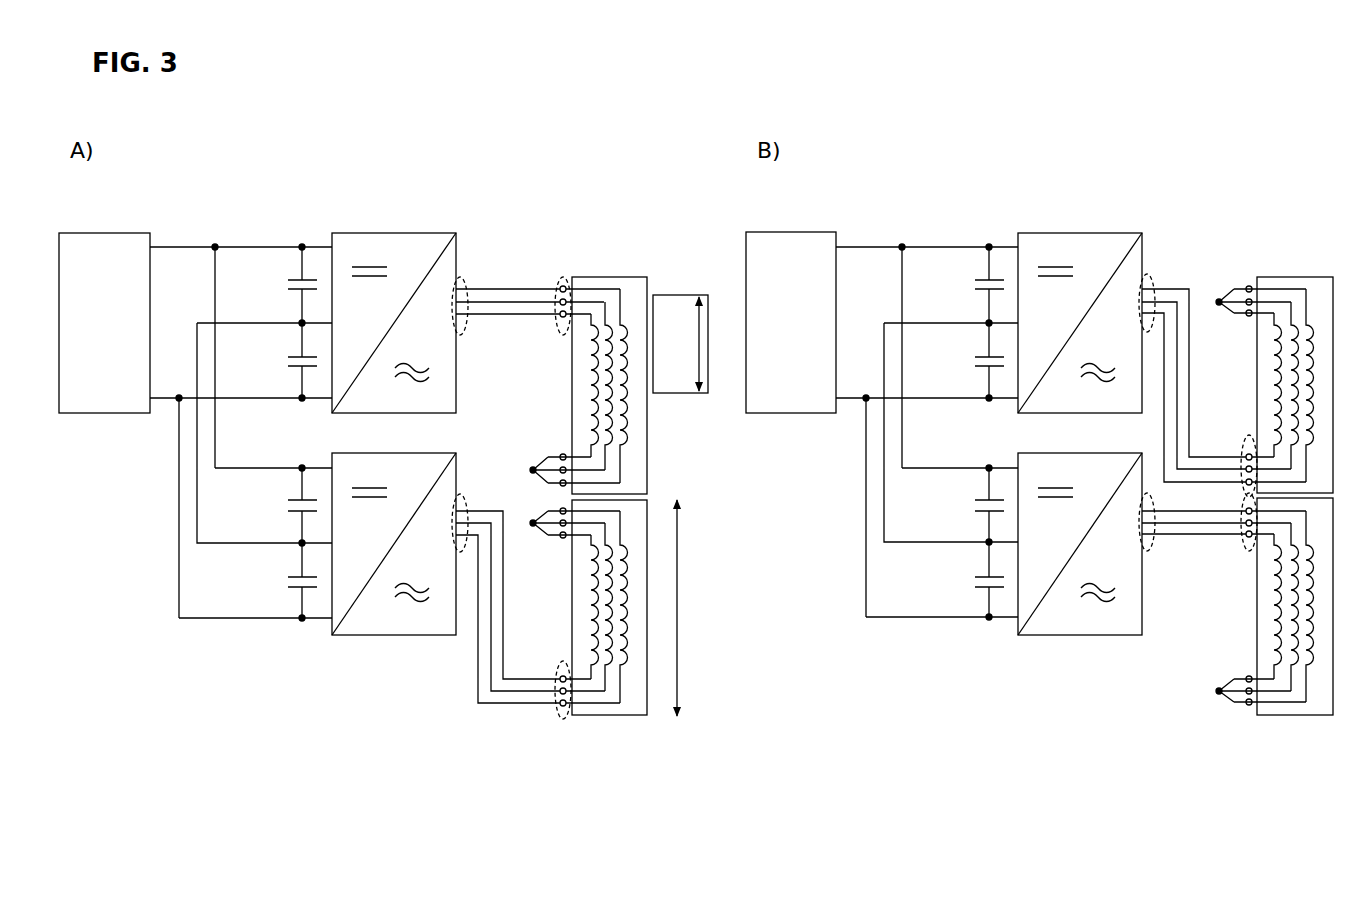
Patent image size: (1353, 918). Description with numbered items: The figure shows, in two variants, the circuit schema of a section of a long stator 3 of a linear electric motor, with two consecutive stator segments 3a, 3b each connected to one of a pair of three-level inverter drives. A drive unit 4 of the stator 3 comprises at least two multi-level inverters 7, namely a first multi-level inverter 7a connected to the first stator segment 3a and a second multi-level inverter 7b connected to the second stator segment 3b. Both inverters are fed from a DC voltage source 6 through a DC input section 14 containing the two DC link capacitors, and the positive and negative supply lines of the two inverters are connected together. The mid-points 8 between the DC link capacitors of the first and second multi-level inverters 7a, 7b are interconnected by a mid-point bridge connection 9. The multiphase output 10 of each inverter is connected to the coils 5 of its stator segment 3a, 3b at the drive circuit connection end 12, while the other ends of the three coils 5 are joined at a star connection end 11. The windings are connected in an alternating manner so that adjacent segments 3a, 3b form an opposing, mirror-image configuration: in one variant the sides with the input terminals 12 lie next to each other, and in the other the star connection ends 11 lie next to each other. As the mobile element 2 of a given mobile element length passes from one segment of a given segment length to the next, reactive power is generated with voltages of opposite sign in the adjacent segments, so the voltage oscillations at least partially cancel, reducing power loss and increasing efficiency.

The mobile element 2 is at (680, 295).
The stator 3 is at (600, 276).
The first stator segment 3a is at (922, 359).
The second stator segment 3b is at (635, 716).
The drive unit 4 is at (156, 193).
The coils 5 is at (610, 438).
The DC voltage source 6 is at (112, 416).
The multi-level inverters 7 is at (464, 255).
The first multi-level inverter 7a is at (370, 233).
The second multi-level inverter 7b is at (377, 637).
The mid-point 8 is at (300, 322).
The mid-point bridge connection 9 is at (197, 493).
The multiphase output 10 is at (470, 282).
The star connection end 11 is at (533, 470).
The drive circuit connection end 12 is at (563, 273).
The DC input section 14 is at (163, 236).